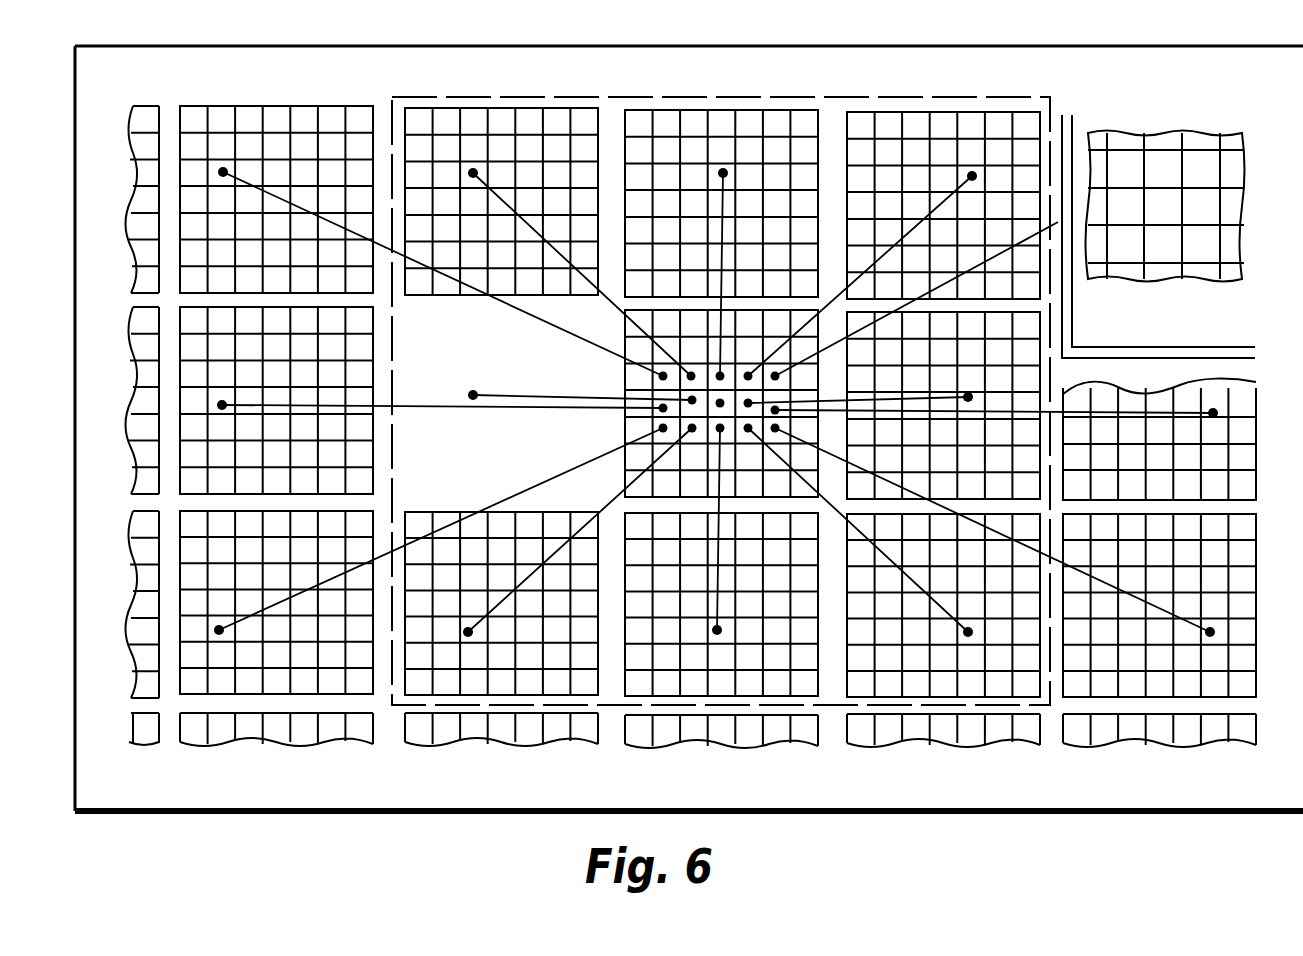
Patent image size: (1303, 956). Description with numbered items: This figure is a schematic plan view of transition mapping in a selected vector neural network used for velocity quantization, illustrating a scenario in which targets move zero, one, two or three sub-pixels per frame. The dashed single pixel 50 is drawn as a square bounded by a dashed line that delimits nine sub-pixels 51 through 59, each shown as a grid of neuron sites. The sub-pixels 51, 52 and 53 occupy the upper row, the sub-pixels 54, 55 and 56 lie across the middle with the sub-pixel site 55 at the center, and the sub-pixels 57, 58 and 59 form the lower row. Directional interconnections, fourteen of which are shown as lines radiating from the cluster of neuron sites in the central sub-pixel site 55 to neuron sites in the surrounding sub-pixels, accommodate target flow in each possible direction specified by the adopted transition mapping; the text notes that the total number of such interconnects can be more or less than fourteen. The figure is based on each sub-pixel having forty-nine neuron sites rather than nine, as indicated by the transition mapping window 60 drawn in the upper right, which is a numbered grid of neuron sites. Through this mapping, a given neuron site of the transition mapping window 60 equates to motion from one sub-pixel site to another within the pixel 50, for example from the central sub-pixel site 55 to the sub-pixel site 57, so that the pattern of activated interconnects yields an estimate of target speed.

The dashed single pixel 50 is at (397, 707).
The sub-pixel 51 is at (557, 108).
The sub-pixel 52 is at (820, 150).
The sub-pixel 53 is at (1040, 128).
The sub-pixel 54 is at (598, 460).
The sub-pixel site 55 is at (818, 452).
The sub-pixel 56 is at (1038, 403).
The sub-pixel site 57 is at (593, 655).
The sub-pixel 58 is at (815, 665).
The sub-pixel 59 is at (1036, 659).
The transition mapping window 60 is at (1233, 253).